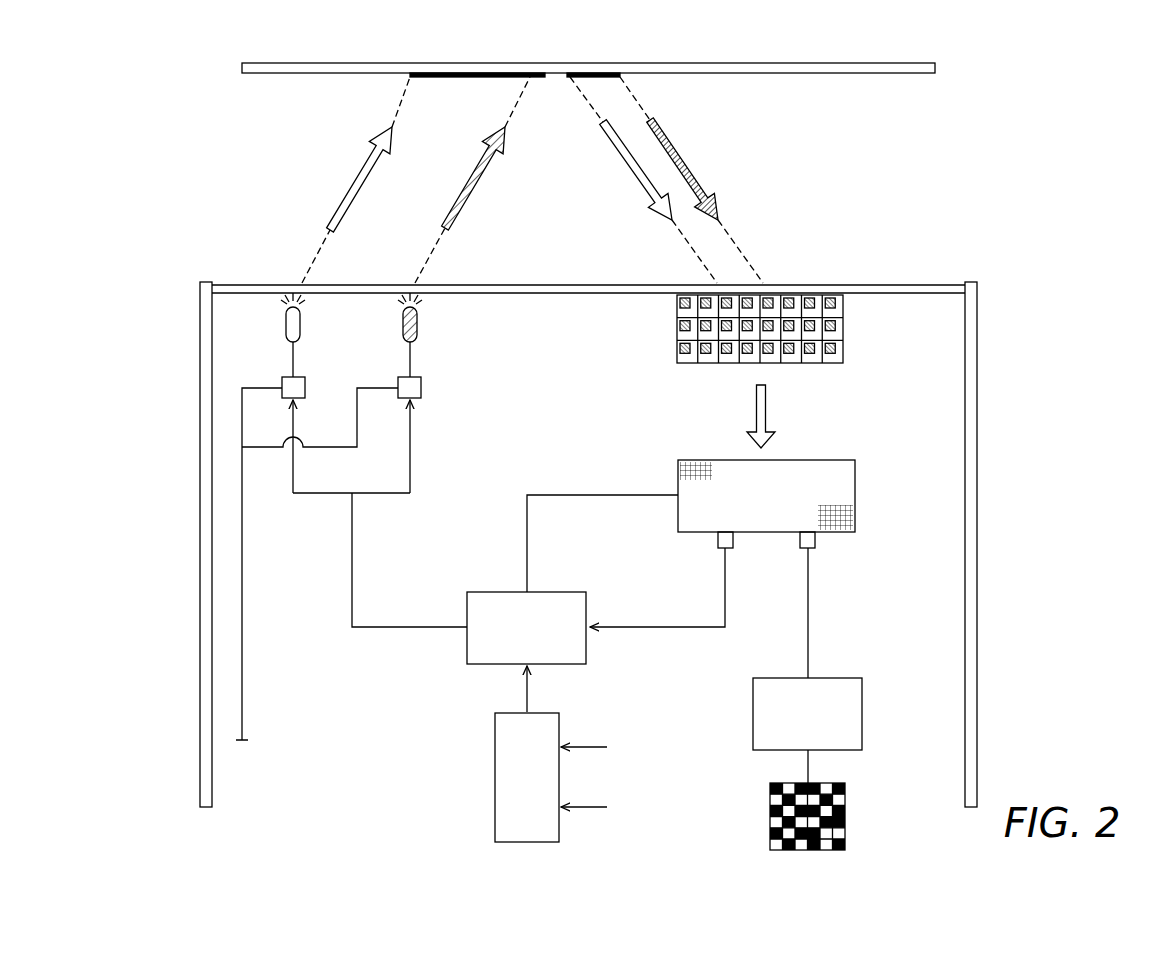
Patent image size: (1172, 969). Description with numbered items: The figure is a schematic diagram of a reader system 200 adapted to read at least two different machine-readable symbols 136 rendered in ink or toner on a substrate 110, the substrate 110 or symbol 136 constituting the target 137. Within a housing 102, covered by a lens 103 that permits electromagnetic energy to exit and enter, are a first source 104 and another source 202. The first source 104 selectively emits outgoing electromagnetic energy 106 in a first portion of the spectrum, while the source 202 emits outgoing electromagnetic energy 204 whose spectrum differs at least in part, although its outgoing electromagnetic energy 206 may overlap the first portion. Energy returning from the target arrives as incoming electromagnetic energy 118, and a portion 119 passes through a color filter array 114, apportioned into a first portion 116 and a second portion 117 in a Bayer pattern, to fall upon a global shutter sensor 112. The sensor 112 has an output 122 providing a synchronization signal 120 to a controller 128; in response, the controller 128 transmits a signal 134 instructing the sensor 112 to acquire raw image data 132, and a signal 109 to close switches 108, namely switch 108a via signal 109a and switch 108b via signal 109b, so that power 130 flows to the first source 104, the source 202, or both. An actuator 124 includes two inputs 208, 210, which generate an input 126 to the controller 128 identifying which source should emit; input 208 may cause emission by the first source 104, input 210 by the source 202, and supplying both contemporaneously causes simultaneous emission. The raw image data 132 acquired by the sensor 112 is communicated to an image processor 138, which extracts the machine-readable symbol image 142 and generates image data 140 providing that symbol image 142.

The housing 102 is at (200, 622).
The lens 103 is at (873, 285).
The first source 104 is at (300, 325).
The outgoing electromagnetic energy 106 is at (360, 187).
The switch 108 is at (384, 375).
The first switch 108a is at (300, 377).
The second switch 108b is at (417, 377).
The signal 109 is at (387, 513).
The first signal 109a is at (293, 465).
The second signal 109b is at (410, 465).
The substrate 110 is at (693, 63).
The global shutter sensor 112 is at (855, 495).
The color filter array 114 is at (843, 330).
The first portion of color filter array 116 is at (677, 301).
The second portion of color filter array 117 is at (840, 310).
The incoming electromagnetic energy 118 is at (625, 162).
The transmitted portion of incoming electromagnetic energy 119 is at (768, 410).
The synchronization signal 120 is at (657, 627).
The output 122 is at (733, 538).
The actuator 124 is at (495, 775).
The input 126 is at (530, 690).
The controller 128 is at (550, 592).
The power supply 130 is at (242, 690).
The raw image data 132 is at (810, 615).
The signal 134 is at (570, 493).
The machine-readable symbol 136 is at (408, 75).
The target 137 is at (900, 60).
The image processor 138 is at (862, 715).
The image data 140 is at (810, 768).
The machine-readable symbol image 142 is at (845, 815).
The reader system 200 is at (208, 142).
The source 202 is at (417, 325).
The outgoing electromagnetic energy 204 is at (472, 187).
The outgoing electromagnetic energy 206 is at (692, 170).
The input 208 is at (605, 747).
The input 210 is at (605, 807).